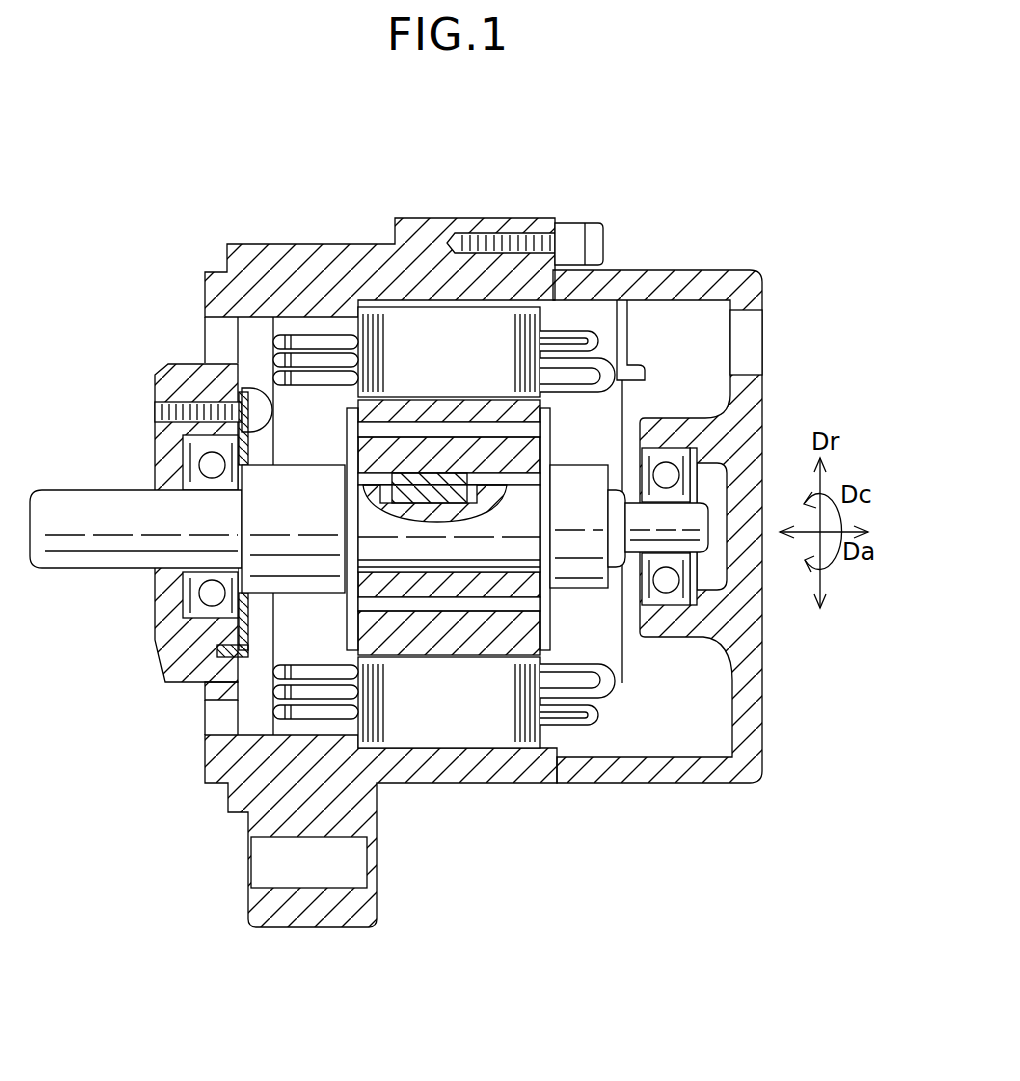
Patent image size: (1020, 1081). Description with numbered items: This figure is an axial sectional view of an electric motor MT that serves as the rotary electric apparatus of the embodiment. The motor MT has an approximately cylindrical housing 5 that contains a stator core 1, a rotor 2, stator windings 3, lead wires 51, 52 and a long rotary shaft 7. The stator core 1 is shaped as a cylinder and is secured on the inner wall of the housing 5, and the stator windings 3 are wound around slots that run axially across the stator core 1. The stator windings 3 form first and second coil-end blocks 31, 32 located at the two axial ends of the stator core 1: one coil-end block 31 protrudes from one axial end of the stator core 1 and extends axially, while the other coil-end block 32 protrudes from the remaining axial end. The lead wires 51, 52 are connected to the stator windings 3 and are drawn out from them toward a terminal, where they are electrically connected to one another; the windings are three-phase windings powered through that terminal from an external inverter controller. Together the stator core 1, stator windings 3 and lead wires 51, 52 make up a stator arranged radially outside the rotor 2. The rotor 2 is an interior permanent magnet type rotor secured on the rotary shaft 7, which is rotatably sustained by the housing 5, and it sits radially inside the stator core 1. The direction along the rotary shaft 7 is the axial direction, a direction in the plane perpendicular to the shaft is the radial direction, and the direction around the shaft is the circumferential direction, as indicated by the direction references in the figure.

The motor MT is at (424, 510).
The stator core 1 is at (428, 328).
The rotor 2 is at (560, 427).
The stator windings 3 is at (457, 446).
The first coil-end block 31 is at (553, 324).
The second coil-end block 32 is at (330, 336).
The housing 5 is at (257, 250).
The lead wire 51 is at (688, 453).
The lead wire 52 is at (631, 340).
The rotary shaft 7 is at (77, 500).